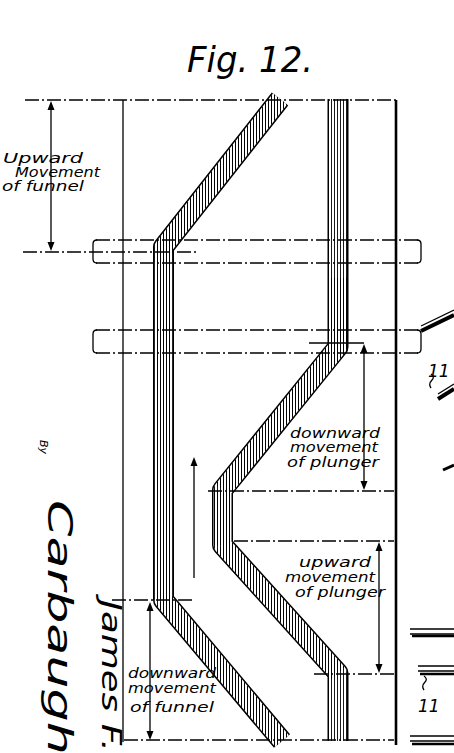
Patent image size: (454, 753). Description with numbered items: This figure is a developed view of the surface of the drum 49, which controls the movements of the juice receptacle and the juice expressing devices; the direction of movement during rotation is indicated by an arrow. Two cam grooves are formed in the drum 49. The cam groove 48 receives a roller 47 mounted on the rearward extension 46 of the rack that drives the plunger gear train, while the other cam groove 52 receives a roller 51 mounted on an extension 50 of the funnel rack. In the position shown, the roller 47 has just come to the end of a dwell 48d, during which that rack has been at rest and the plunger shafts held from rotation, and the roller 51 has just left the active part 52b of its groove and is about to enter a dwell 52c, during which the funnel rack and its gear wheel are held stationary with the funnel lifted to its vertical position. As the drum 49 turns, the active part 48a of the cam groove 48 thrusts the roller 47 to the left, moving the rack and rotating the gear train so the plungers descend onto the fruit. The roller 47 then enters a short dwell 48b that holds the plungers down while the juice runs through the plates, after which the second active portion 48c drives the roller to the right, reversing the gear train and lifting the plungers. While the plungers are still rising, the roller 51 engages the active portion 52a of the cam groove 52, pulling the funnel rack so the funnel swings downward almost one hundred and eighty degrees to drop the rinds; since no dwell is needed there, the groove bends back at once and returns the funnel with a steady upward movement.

The rearward extension 46 is at (269, 330).
The roller 47 is at (347, 334).
The cam groove 48 is at (331, 184).
The active part of the cam groove 48a is at (300, 407).
The short dwell 48b is at (233, 514).
The second active portion of the cam groove 48c is at (296, 611).
The dwell 48d is at (331, 293).
The drum 49 is at (122, 388).
The extension 50 is at (261, 240).
The roller 51 is at (153, 250).
The cam groove 52 is at (172, 447).
The active portion of the cam groove 52a is at (259, 658).
The active part of the cam groove 52b is at (229, 153).
The dwell 52c is at (168, 387).